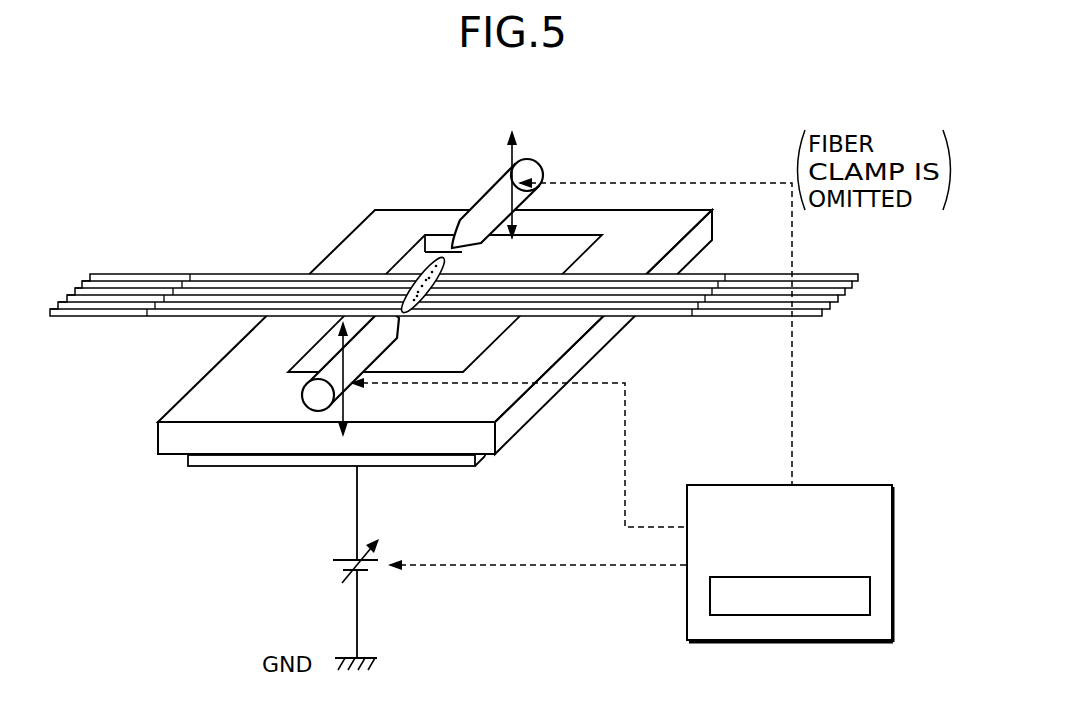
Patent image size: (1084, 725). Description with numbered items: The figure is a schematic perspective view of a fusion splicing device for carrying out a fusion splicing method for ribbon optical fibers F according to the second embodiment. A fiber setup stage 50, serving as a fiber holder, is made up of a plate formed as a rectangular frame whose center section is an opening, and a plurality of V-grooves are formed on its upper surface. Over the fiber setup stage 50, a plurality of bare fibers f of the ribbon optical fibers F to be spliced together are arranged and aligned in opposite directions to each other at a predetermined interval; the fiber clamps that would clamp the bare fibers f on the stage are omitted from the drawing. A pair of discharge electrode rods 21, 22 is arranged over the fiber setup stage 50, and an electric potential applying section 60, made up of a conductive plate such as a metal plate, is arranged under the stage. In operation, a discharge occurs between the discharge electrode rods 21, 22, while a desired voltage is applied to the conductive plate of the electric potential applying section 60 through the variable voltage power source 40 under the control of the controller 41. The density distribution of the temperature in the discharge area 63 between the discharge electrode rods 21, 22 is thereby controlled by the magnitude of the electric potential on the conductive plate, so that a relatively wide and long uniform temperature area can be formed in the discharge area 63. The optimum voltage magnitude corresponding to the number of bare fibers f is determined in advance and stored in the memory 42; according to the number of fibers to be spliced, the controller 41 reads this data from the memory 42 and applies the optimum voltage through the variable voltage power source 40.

The discharge electrode rod 21 is at (540, 158).
The discharge electrode rod 22 is at (313, 405).
The variable voltage power source 40 is at (330, 563).
The controller 41 is at (850, 485).
The memory 42 is at (738, 615).
The fiber setup stage 50 is at (200, 379).
The electric potential applying section 60 is at (420, 470).
The discharge area 63 is at (422, 265).
The ribbon optical fiber F is at (117, 274).
The bare fiber f is at (380, 274).